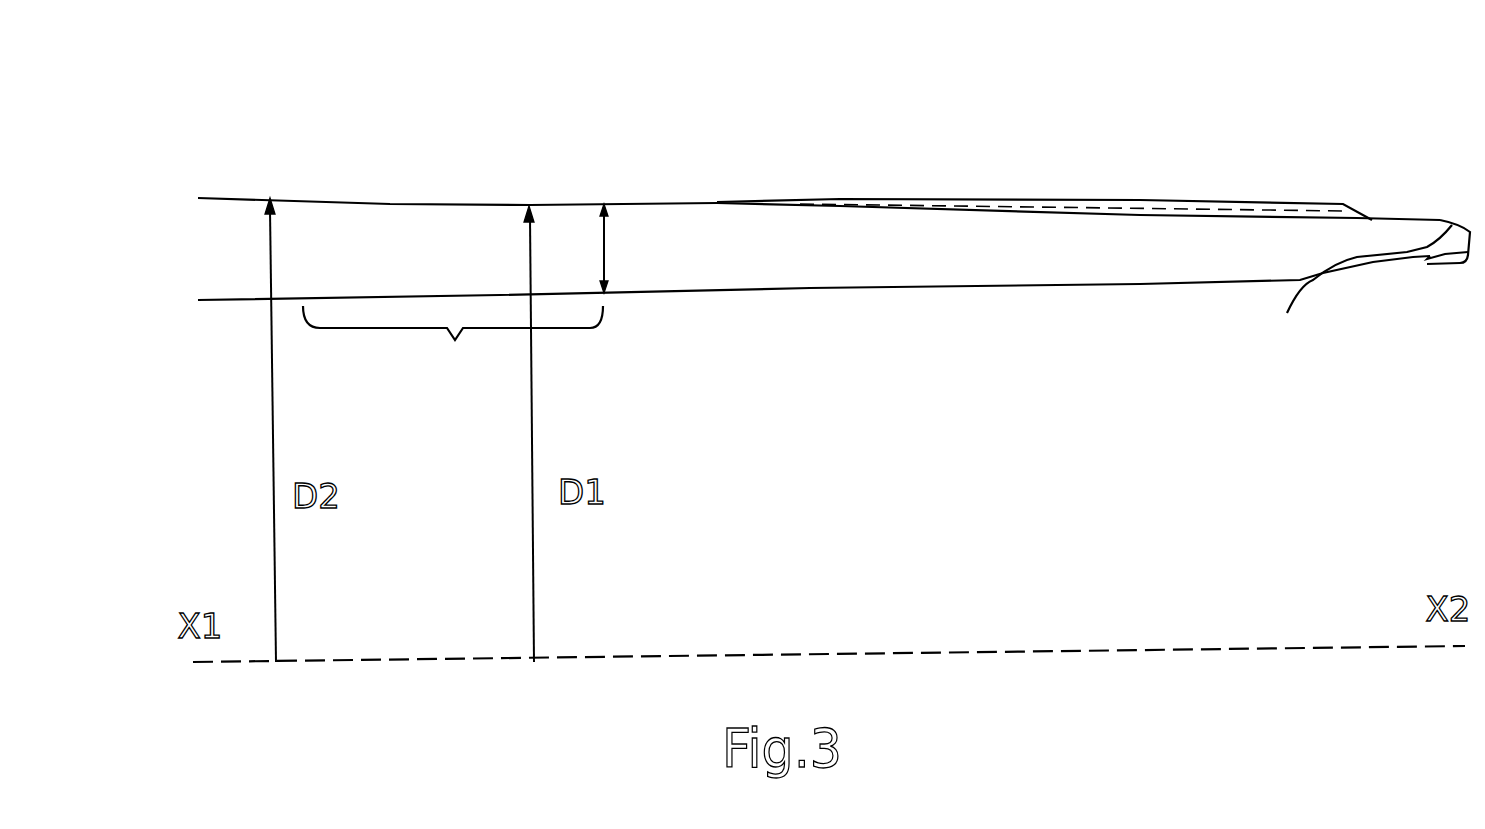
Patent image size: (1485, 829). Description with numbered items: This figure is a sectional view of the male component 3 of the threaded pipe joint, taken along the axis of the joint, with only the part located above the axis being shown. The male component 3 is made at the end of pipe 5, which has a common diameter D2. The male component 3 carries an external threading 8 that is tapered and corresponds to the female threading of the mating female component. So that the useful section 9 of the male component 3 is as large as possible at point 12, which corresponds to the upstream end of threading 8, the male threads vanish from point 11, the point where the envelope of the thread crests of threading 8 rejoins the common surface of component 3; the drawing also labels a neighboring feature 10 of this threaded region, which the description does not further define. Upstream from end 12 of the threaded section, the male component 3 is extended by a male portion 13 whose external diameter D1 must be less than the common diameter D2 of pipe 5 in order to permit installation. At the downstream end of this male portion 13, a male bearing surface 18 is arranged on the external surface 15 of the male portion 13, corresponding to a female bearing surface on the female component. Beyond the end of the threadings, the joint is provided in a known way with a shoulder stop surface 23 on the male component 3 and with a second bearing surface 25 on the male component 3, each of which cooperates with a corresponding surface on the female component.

The male component 3 is at (710, 294).
The pipe 5 is at (227, 232).
The external threading 8 is at (1180, 200).
The useful section 9 is at (623, 248).
The upper layer 10 is at (838, 198).
The point where male threads vanish 11 is at (930, 198).
The upstream end of threading 12 is at (603, 203).
The male portion 13 is at (453, 358).
The external surface of the male portion 15 is at (500, 175).
The male bearing surface 18 is at (390, 204).
The shoulder stop surface 23 is at (1427, 265).
The second bearing surface 25 is at (1357, 293).